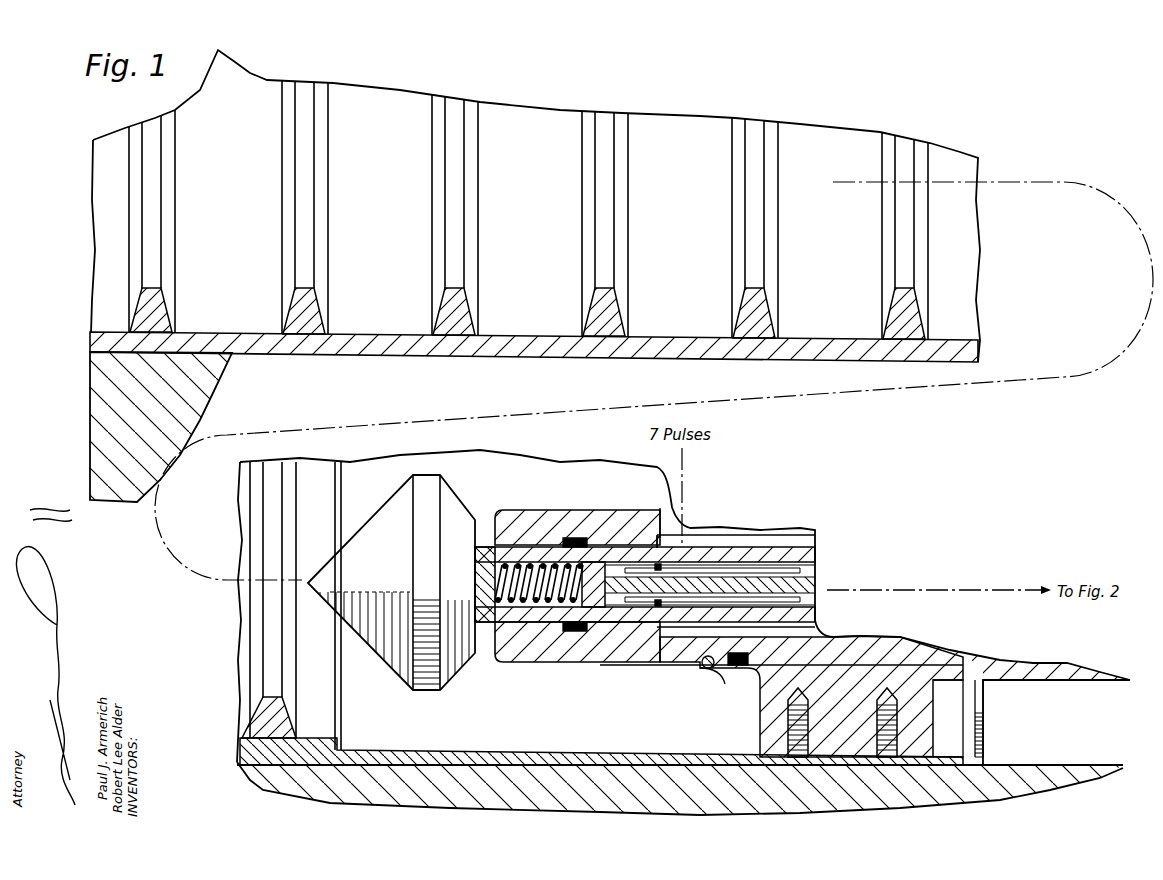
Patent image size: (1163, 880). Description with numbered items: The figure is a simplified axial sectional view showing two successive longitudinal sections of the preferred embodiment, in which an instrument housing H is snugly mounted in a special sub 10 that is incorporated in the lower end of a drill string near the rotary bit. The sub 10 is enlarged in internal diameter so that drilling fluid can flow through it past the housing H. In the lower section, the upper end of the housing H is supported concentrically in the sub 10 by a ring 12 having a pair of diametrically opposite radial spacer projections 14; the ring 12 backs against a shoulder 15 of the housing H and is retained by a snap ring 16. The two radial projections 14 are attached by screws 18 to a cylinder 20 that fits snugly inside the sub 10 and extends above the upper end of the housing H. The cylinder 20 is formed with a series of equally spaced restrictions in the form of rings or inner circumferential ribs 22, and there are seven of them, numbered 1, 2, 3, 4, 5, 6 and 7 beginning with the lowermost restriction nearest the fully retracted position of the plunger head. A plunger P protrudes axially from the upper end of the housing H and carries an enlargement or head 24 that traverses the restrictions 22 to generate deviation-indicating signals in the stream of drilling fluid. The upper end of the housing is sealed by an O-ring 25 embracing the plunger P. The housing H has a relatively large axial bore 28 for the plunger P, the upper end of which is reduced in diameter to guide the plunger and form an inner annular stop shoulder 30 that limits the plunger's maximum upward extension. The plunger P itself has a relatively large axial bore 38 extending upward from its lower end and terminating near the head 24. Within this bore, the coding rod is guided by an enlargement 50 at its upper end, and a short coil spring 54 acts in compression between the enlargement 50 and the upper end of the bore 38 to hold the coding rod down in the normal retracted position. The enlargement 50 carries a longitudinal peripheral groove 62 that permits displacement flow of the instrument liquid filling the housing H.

The sub 10 is at (213, 393).
The ring 12 is at (712, 683).
The radial spacer projections 14 is at (753, 713).
The shoulder 15 is at (960, 680).
The snap ring 16 is at (702, 666).
The screws 18 is at (885, 690).
The cylinder 20 is at (512, 337).
The restrictions 22 is at (156, 224).
The plunger head 24 is at (447, 490).
The O-ring 25 is at (573, 537).
The axial bore 28 is at (738, 540).
The stop shoulder 30 is at (654, 517).
The axial bore 38 is at (803, 565).
The enlargement 50 is at (593, 557).
The short coil spring 54 is at (533, 603).
The longitudinal peripheral groove 62 is at (598, 620).
The restriction 1 is at (269, 708).
The restriction 2 is at (904, 308).
The restriction 3 is at (754, 307).
The restriction 4 is at (604, 305).
The restriction 5 is at (454, 303).
The restriction 6 is at (304, 302).
The restriction 7 is at (151, 301).
The plunger P is at (533, 540).
The instrument housing H is at (617, 507).